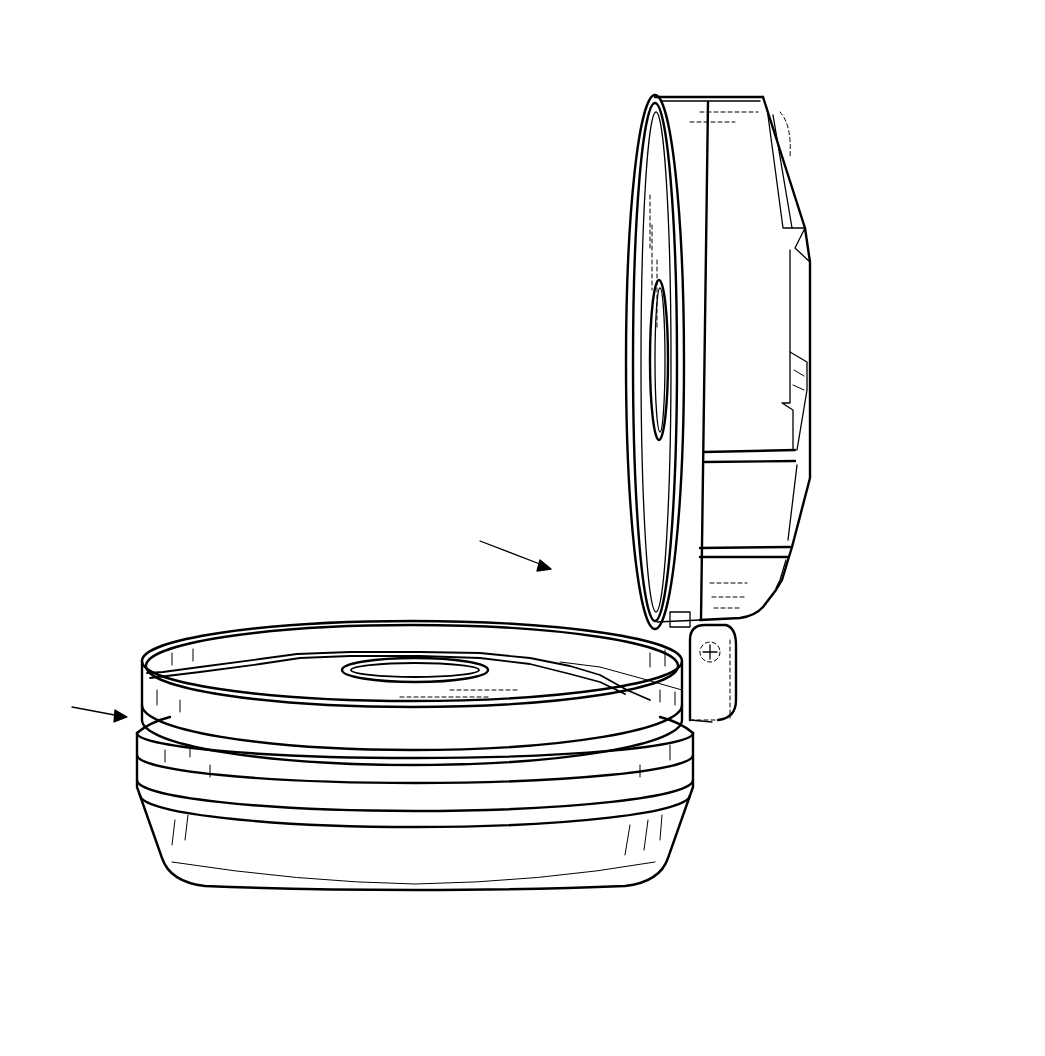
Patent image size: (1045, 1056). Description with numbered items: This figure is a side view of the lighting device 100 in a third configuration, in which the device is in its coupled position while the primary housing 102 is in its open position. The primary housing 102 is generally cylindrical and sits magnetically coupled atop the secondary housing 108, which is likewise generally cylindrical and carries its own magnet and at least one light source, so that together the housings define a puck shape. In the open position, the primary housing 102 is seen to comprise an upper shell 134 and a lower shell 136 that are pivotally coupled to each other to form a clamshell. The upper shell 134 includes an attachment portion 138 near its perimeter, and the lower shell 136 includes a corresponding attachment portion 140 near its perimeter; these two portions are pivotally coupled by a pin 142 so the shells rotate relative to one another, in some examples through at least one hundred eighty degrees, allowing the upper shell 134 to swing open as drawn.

The lighting device 100 is at (300, 261).
The primary housing 102 is at (842, 668).
The secondary housing 108 is at (270, 853).
The upper shell 134 is at (737, 124).
The lower shell 136 is at (210, 640).
The attachment portion 138 is at (728, 634).
The corresponding attachment portion 140 is at (714, 711).
The pin 142 is at (719, 651).